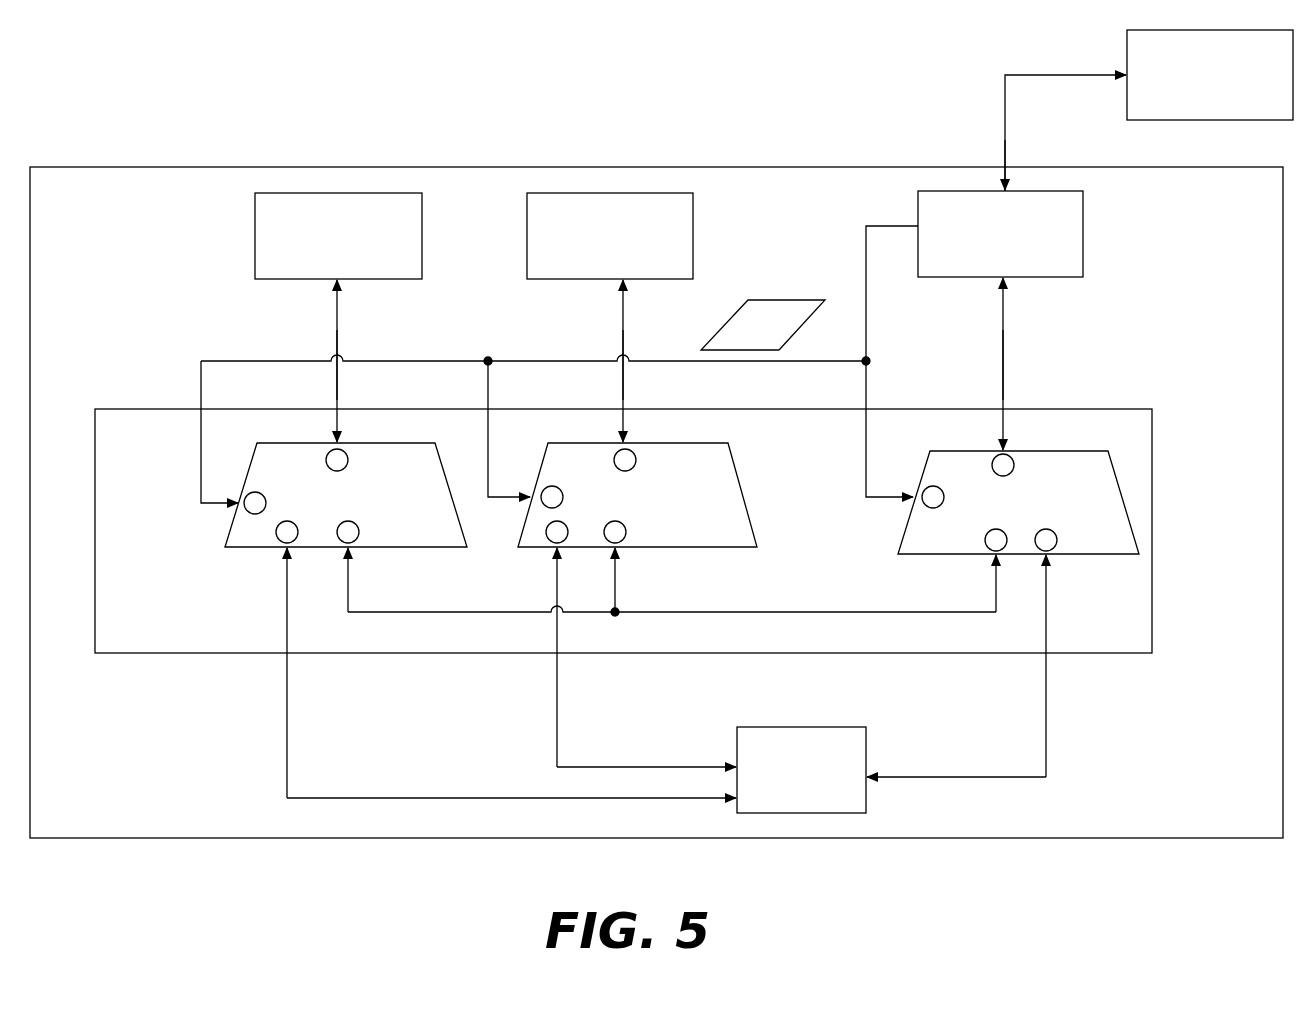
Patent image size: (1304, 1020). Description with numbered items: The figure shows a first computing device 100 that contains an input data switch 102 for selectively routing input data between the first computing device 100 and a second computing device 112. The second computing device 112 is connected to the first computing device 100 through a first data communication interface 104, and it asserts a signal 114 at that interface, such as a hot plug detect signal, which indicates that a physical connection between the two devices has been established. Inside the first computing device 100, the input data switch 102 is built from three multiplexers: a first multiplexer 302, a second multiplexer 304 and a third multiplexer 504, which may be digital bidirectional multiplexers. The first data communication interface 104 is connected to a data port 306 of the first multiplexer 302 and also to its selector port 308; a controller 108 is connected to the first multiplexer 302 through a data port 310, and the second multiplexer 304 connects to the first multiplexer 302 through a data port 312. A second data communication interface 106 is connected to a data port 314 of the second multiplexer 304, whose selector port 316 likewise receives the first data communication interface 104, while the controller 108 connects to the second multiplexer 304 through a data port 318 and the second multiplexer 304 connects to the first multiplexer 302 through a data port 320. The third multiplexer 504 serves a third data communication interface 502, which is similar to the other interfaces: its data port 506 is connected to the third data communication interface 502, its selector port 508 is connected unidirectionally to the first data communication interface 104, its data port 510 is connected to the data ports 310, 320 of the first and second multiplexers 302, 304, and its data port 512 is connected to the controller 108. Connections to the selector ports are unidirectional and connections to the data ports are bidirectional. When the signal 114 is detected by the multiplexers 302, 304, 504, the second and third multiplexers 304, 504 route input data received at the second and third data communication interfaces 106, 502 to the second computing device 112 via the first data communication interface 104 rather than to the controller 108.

The first computing device 100 is at (656, 502).
The input data switch 102 is at (623, 531).
The first data communication interface 104 is at (1000, 234).
The second data communication interface 106 is at (610, 236).
The controller 108 is at (801, 770).
The second computing device 112 is at (1210, 75).
The signal 114 is at (763, 325).
The first multiplexer 302 is at (1050, 506).
The second multiplexer 304 is at (619, 503).
The data port 306 is at (1013, 463).
The selector port 308 is at (932, 488).
The data port 310 is at (1055, 533).
The data port 312 is at (987, 535).
The data port 314 is at (635, 462).
The selector port 316 is at (555, 485).
The data port 318 is at (547, 531).
The data port 320 is at (619, 525).
The third data communication interface 502 is at (338, 236).
The third multiplexer 504 is at (338, 508).
The data port 506 is at (347, 462).
The selector port 508 is at (258, 492).
The data port 510 is at (353, 523).
The data port 512 is at (277, 530).